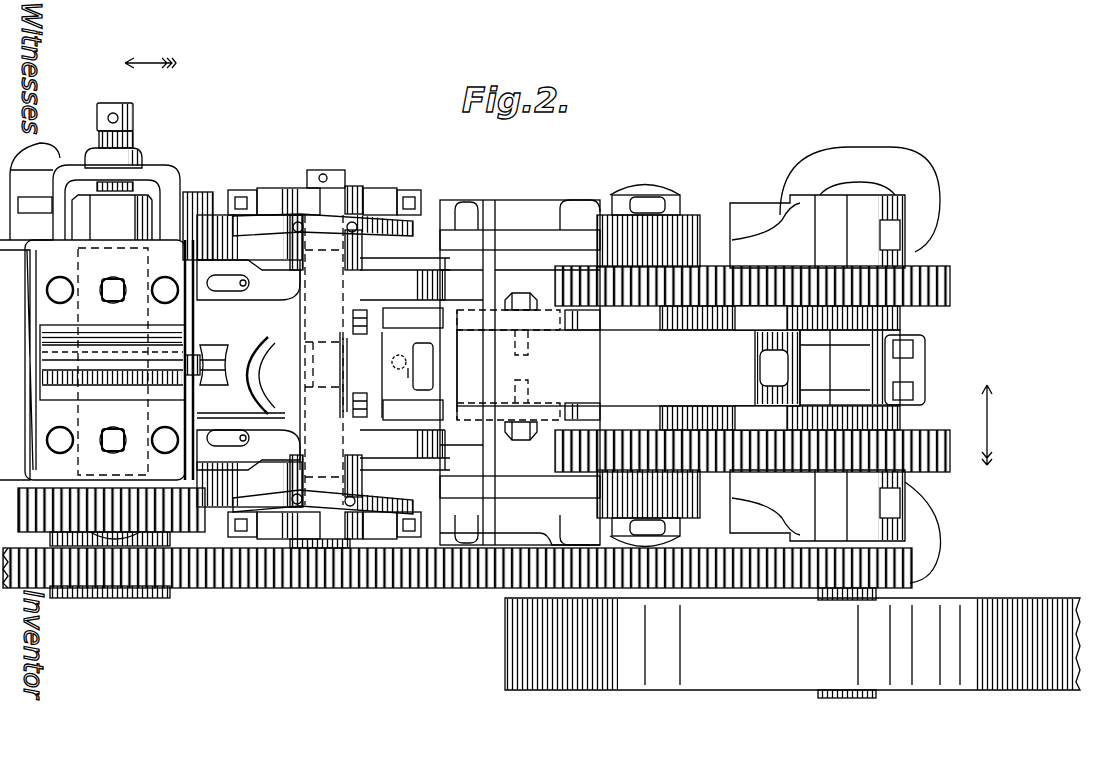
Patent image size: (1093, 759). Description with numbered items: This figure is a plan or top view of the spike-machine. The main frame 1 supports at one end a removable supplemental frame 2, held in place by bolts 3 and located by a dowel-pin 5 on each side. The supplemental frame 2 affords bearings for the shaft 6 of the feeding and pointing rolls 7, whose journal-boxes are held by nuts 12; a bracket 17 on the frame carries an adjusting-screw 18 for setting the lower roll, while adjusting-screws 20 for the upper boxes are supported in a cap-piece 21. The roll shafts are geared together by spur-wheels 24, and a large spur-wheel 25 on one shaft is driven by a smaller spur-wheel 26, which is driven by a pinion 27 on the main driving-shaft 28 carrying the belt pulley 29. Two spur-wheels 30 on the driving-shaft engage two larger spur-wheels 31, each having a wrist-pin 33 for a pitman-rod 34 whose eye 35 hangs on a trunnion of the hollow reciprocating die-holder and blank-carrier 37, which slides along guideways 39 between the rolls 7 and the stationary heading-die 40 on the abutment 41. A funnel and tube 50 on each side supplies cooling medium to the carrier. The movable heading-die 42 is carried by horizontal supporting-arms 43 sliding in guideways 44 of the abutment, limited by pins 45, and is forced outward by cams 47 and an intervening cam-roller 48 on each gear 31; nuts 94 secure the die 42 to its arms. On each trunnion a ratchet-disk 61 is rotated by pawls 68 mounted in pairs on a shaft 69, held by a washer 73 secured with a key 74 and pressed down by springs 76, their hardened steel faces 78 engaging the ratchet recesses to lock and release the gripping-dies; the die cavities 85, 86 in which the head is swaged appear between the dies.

The main frame 1 is at (520, 372).
The supplemental frame 2 is at (92, 311).
The bolts 3 is at (925, 368).
The dowel-pin 5 is at (115, 100).
The shaft 6 is at (97, 188).
The feeding and pointing rolls 7 is at (112, 362).
The nuts 12 is at (112, 217).
The bracket 17 is at (160, 172).
The adjusting-screw 18 is at (130, 136).
The adjusting-screws 20 is at (116, 280).
The cap-piece 21 is at (112, 360).
The spur-wheels 24 is at (114, 520).
The large spur-wheel 25 is at (172, 590).
The smaller spur-wheel 26 is at (520, 544).
The pinion 27 is at (910, 577).
The main driving-shaft 28 is at (846, 600).
The pulley 29 is at (792, 644).
The spur-wheels 30 is at (764, 369).
The spur-wheels 31 is at (765, 272).
The wrist-pin 33 is at (662, 207).
The pitman-rods 34 is at (520, 364).
The eyes 35 is at (249, 361).
The reciprocating die-holder and blank-carrier 37 is at (242, 365).
The guideways 39 is at (370, 361).
The stationary heading-die 40 is at (423, 366).
The abutment 41 is at (628, 365).
The movable heading-die 42 is at (361, 375).
The supporting-arms 43 is at (413, 364).
The guideways 44 is at (528, 365).
The pins 45 is at (521, 367).
The cams 47 is at (780, 368).
The cam-roller 48 is at (761, 368).
The funnel and tube 50 is at (248, 365).
The ratchet-disk 61 is at (200, 327).
The pawls 68 is at (327, 363).
The shaft 69 is at (326, 170).
The washer 73 is at (298, 600).
The key 74 is at (319, 178).
The spring 76 is at (323, 364).
The steel faces 78 is at (324, 362).
The pin 85 is at (413, 372).
The hole 86 is at (398, 362).
The nuts 94 is at (353, 324).